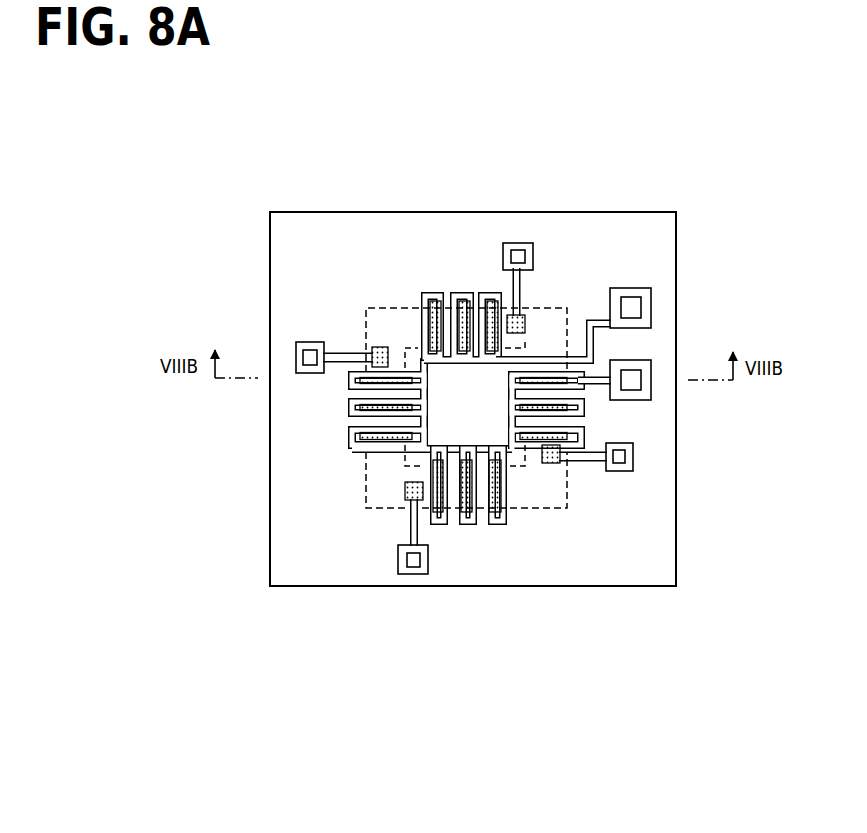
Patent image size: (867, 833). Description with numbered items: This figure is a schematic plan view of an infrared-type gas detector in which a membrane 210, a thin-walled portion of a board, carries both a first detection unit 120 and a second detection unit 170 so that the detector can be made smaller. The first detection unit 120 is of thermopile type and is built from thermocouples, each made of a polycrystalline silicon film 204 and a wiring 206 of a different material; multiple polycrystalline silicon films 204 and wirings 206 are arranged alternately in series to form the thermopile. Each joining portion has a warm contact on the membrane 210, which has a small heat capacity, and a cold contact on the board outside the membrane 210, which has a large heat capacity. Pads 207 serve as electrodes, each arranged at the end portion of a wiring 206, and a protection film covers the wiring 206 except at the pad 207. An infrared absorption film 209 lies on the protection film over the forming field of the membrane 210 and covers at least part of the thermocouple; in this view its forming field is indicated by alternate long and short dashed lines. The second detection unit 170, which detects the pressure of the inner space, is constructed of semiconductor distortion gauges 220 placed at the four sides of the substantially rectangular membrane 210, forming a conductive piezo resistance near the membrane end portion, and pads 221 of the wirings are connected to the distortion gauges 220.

The first detection unit 120 is at (435, 286).
The wiring 206 is at (497, 320).
The polycrystalline silicon film 204 is at (523, 315).
The pad 207 is at (633, 310).
The semiconductor distortion gauge 220 is at (383, 347).
The pad of the wiring 221 is at (302, 345).
The second detection unit 170 is at (582, 469).
The infrared absorption film 209 is at (410, 464).
The membrane 210 is at (537, 509).